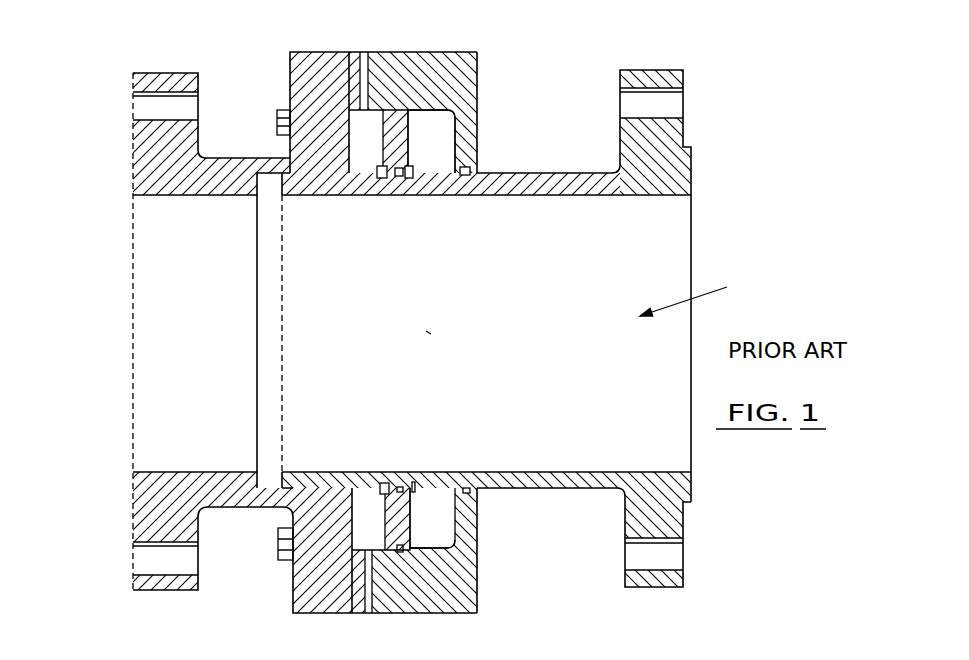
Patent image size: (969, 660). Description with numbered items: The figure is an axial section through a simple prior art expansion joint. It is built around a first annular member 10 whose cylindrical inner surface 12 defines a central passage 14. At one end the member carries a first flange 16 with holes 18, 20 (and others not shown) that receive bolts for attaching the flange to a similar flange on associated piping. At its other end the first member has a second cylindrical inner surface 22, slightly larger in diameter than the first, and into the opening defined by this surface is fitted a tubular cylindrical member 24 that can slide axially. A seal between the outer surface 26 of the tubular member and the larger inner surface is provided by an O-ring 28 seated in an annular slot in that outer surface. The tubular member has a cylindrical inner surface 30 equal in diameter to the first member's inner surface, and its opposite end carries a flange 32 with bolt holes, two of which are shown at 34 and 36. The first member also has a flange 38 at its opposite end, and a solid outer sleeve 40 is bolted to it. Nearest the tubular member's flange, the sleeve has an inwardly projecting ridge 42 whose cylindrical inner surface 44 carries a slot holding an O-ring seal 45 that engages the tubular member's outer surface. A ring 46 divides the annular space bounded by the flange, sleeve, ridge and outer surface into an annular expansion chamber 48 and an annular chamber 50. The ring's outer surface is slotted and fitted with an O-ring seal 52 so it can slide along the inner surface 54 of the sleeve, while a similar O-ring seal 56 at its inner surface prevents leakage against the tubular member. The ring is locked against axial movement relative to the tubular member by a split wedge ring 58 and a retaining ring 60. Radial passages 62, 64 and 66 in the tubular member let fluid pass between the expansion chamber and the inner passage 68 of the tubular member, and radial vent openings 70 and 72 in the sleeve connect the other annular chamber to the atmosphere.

The first annular member 10 is at (203, 183).
The cylindrical inner surface 12 is at (163, 471).
The central passage 14 is at (130, 352).
The first flange 16 is at (191, 142).
The hole 18 is at (140, 107).
The hole 20 is at (137, 560).
The second cylindrical inner surface 22 is at (268, 178).
The tubular cylindrical member 24 is at (330, 190).
The outer surface 26 is at (525, 172).
The O-ring 28 is at (305, 482).
The cylindrical inner surface 30 is at (508, 196).
The flange 32 is at (675, 142).
The bolt hole 34 is at (630, 107).
The bolt hole 36 is at (630, 557).
The flange 38 is at (290, 85).
The solid outer sleeve 40 is at (425, 58).
The inwardly projecting ridge 42 is at (466, 139).
The cylindrical inner surface 44 is at (452, 185).
The O-ring seal 45 is at (466, 165).
The ring 46 is at (404, 150).
The annular expansion chamber 48 is at (448, 118).
The annular chamber 50 is at (373, 122).
The O-ring seal 52 is at (403, 552).
The inner surface 54 is at (445, 545).
The O-ring seal 56 is at (396, 496).
The split wedge ring 58 is at (385, 483).
The retaining ring 60 is at (404, 523).
The radial passage 62 is at (423, 178).
The radial passage 64 is at (430, 332).
The radial passage 66 is at (425, 478).
The inner passage 68 is at (700, 294).
The radial vent opening 70 is at (368, 607).
The radial vent opening 72 is at (356, 74).